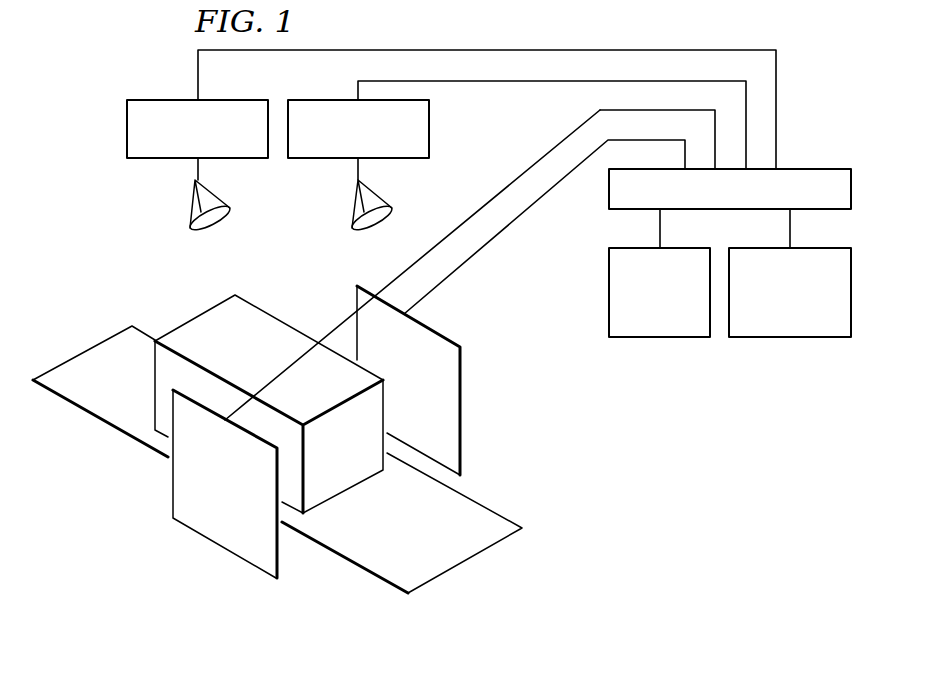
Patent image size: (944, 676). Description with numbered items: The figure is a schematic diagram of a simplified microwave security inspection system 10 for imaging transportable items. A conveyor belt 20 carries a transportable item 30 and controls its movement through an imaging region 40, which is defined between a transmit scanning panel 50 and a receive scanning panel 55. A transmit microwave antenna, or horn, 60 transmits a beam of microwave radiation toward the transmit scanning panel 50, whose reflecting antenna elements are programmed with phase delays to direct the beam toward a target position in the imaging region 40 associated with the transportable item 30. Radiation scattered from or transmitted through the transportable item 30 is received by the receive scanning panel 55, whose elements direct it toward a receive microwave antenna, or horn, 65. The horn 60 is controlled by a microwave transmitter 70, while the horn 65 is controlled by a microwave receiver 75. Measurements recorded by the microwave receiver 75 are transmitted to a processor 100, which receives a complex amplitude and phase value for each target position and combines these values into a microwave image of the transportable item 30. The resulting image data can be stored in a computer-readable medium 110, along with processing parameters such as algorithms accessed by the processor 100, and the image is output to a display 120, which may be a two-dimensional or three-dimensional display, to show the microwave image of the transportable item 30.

The microwave security inspection system 10 is at (735, 401).
The conveyor belt 20 is at (463, 563).
The transportable item 30 is at (196, 316).
The imaging region 40 is at (347, 348).
The transmit scanning panel 50 is at (223, 548).
The receive scanning panel 55 is at (445, 331).
The transmit microwave antenna (horn) 60 is at (190, 209).
The receive microwave antenna (horn) 65 is at (352, 210).
The microwave transmitter 70 is at (127, 128).
The microwave receiver 75 is at (429, 130).
The processor 100 is at (808, 169).
The computer-readable medium 110 is at (800, 337).
The display 120 is at (650, 337).